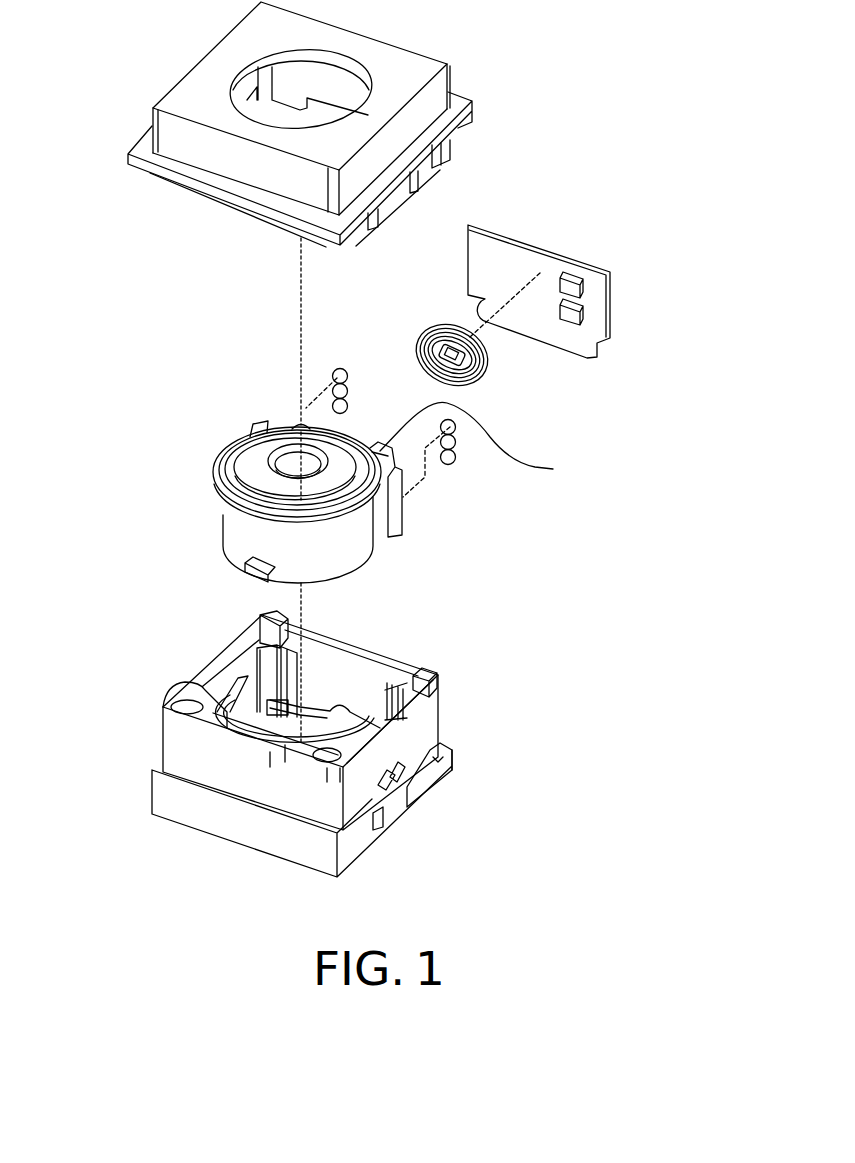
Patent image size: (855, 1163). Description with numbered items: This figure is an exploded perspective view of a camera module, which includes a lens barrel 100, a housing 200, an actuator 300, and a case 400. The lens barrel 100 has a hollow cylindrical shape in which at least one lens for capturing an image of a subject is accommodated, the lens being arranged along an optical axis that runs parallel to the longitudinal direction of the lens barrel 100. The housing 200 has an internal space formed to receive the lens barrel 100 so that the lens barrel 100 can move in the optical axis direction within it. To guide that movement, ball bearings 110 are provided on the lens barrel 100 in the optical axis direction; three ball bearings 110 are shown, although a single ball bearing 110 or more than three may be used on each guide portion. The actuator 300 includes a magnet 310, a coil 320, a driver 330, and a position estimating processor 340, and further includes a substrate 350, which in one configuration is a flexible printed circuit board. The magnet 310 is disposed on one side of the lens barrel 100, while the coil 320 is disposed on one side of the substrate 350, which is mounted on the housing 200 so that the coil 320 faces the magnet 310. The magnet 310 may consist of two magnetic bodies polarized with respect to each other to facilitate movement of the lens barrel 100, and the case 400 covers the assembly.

The lens barrel 100 is at (222, 515).
The ball bearing 110 is at (460, 462).
The housing 200 is at (228, 828).
The actuator 300 is at (583, 361).
The magnet 310 is at (490, 445).
The coil 320 is at (520, 385).
The driver 330 is at (575, 296).
The position estimating processor 340 is at (597, 348).
The substrate 350 is at (565, 345).
The case 400 is at (170, 137).